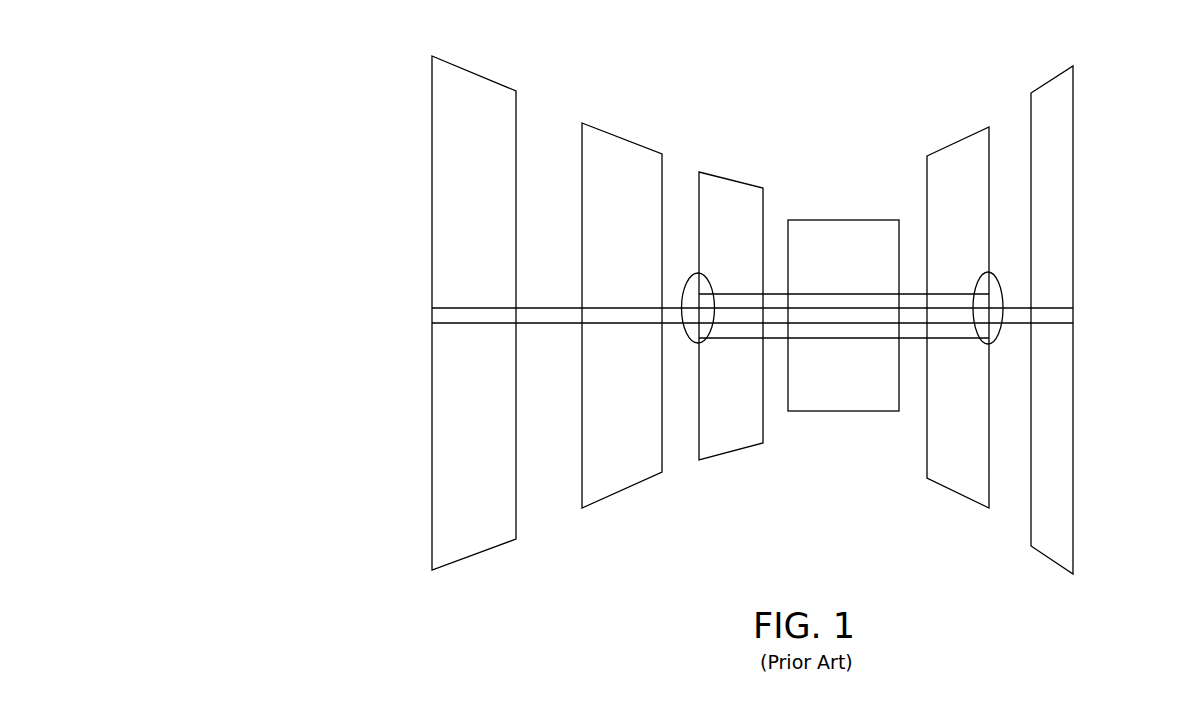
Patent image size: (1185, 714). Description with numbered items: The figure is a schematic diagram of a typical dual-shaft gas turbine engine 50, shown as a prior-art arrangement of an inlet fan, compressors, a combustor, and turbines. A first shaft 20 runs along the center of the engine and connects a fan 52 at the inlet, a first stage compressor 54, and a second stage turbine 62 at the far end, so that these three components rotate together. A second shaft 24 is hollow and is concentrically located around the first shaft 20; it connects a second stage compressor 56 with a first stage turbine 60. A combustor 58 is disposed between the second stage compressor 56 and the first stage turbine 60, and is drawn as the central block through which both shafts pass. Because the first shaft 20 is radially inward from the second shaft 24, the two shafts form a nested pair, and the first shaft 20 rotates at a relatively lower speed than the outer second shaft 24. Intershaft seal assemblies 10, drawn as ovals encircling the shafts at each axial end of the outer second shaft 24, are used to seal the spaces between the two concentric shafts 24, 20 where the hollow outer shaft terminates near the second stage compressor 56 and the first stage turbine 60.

The dual-shaft gas turbine engine 50 is at (297, 93).
The fan 52 is at (473, 86).
The first stage compressor 54 is at (618, 153).
The second stage compressor 56 is at (736, 189).
The combustor 58 is at (857, 228).
The first stage turbine 60 is at (968, 152).
The second stage turbine 62 is at (1067, 82).
The first shaft 20 is at (1067, 320).
The intershaft seal assembly 10 is at (690, 342).
The second shaft 24 is at (907, 328).